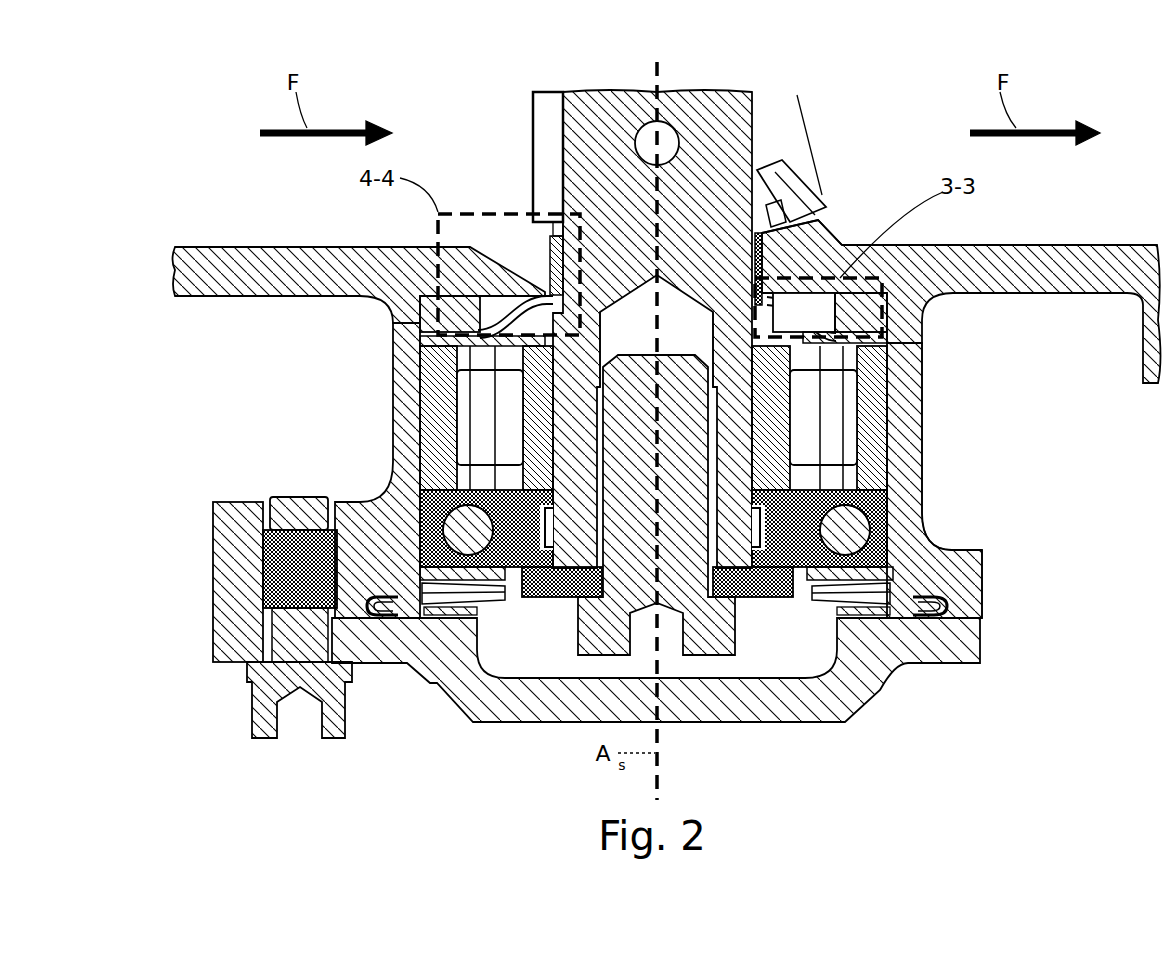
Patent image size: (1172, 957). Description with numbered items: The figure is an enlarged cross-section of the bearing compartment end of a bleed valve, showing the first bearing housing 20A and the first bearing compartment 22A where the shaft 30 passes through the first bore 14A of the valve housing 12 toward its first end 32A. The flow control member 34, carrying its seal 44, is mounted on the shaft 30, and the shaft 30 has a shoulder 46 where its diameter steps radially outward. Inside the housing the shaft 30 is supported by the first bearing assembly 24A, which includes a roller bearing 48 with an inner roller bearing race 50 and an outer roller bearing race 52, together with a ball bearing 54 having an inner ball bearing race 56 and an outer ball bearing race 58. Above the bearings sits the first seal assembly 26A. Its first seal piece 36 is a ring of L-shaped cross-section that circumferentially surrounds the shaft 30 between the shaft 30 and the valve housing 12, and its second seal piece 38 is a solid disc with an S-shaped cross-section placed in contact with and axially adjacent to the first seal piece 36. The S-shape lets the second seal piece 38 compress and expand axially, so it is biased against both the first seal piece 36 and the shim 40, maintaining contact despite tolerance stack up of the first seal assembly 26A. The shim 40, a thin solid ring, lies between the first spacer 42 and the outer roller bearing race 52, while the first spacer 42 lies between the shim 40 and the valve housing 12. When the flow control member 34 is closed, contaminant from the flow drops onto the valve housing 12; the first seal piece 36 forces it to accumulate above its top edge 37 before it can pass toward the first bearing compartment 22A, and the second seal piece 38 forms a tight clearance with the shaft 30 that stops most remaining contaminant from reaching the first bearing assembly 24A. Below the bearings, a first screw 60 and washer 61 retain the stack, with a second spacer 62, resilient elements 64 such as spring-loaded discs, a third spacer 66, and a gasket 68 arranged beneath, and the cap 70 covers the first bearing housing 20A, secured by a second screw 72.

The valve housing 12 is at (262, 245).
The first bore 14A is at (805, 270).
The first bearing housing 20A is at (923, 497).
The first bearing compartment 22A is at (393, 352).
The first bearing assembly 24A is at (830, 722).
The first seal assembly 26A is at (536, 276).
The shaft 30 is at (565, 150).
The first end 32A is at (520, 413).
The flow control member 34 is at (533, 105).
The first seal piece 36 is at (548, 257).
The top edge 37 is at (553, 228).
The second seal piece 38 is at (892, 243).
The shim 40 is at (923, 338).
The first spacer 42 is at (923, 302).
The seal 44 is at (800, 180).
The shoulder 46 is at (713, 320).
The roller bearing 48 is at (923, 422).
The inner roller bearing race 50 is at (923, 470).
The outer roller bearing race 52 is at (923, 380).
The ball bearing 54 is at (368, 497).
The inner ball bearing race 56 is at (505, 603).
The outer ball bearing race 58 is at (372, 478).
The first screw 60 is at (713, 655).
The washer 61 is at (550, 597).
The second spacer 62 is at (943, 547).
The resilient elements 64 is at (982, 575).
The third spacer 66 is at (892, 653).
The gasket 68 is at (982, 600).
The cap 70 is at (932, 663).
The second screw 72 is at (250, 697).